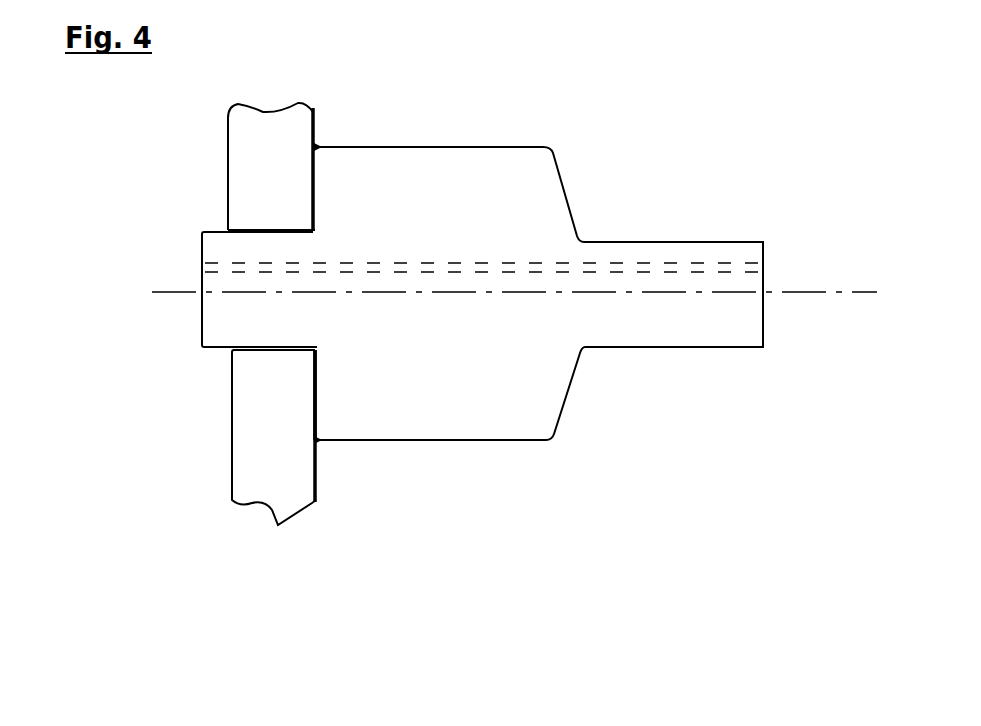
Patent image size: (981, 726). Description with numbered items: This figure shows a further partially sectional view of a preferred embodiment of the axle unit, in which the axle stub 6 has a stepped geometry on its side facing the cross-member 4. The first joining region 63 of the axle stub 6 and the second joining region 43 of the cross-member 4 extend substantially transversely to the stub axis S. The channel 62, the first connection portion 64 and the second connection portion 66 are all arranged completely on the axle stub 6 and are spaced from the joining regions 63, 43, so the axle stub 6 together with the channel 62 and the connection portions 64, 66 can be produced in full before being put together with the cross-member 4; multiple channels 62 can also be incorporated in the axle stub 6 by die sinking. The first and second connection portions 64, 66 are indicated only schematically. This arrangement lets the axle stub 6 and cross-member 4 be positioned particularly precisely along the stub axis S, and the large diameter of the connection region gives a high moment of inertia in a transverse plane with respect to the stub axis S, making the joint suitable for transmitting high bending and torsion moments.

The cross-member 4 is at (253, 427).
The second joining region 43 is at (313, 412).
The axle stub 6 is at (545, 440).
The channel 62 is at (575, 267).
The first joining region 63 is at (318, 390).
The first connection portion 64 is at (763, 273).
The second connection portion 66 is at (207, 245).
The stub axis S is at (800, 293).